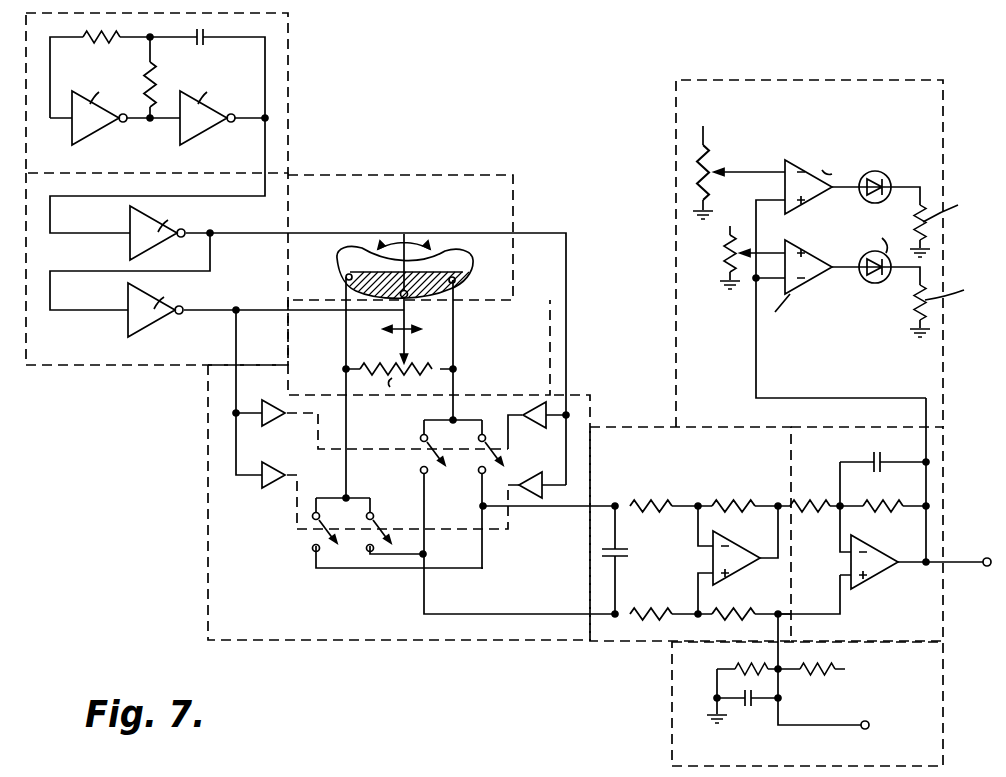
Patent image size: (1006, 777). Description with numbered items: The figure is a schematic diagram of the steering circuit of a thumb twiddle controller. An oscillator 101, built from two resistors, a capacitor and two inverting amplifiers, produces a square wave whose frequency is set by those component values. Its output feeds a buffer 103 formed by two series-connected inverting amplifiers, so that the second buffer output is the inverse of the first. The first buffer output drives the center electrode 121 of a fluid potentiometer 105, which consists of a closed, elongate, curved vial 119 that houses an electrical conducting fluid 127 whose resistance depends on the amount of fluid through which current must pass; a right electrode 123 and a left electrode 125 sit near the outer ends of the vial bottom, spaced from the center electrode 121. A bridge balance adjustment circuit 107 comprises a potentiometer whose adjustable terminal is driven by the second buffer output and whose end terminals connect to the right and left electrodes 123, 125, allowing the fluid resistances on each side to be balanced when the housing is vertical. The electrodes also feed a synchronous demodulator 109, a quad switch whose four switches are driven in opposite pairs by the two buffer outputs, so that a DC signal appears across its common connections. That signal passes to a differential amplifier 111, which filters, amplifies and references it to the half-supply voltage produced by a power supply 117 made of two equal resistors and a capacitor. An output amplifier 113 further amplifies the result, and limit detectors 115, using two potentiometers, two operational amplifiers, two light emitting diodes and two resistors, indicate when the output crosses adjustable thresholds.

The oscillator 101 is at (280, 135).
The buffer 103 is at (182, 352).
The fluid potentiometer 105 is at (421, 241).
The bridge balance adjustment circuit 107 is at (545, 368).
The synchronous demodulator 109 is at (350, 631).
The differential amplifier 111 is at (614, 432).
The output amplifier 113 is at (940, 456).
The limit detectors 115 is at (932, 358).
The power supply 117 is at (935, 676).
The vial 119 is at (468, 256).
The center electrode 121 is at (406, 301).
The right electrode 123 is at (455, 282).
The left electrode 125 is at (346, 280).
The electrical conducting fluid 127 is at (440, 266).